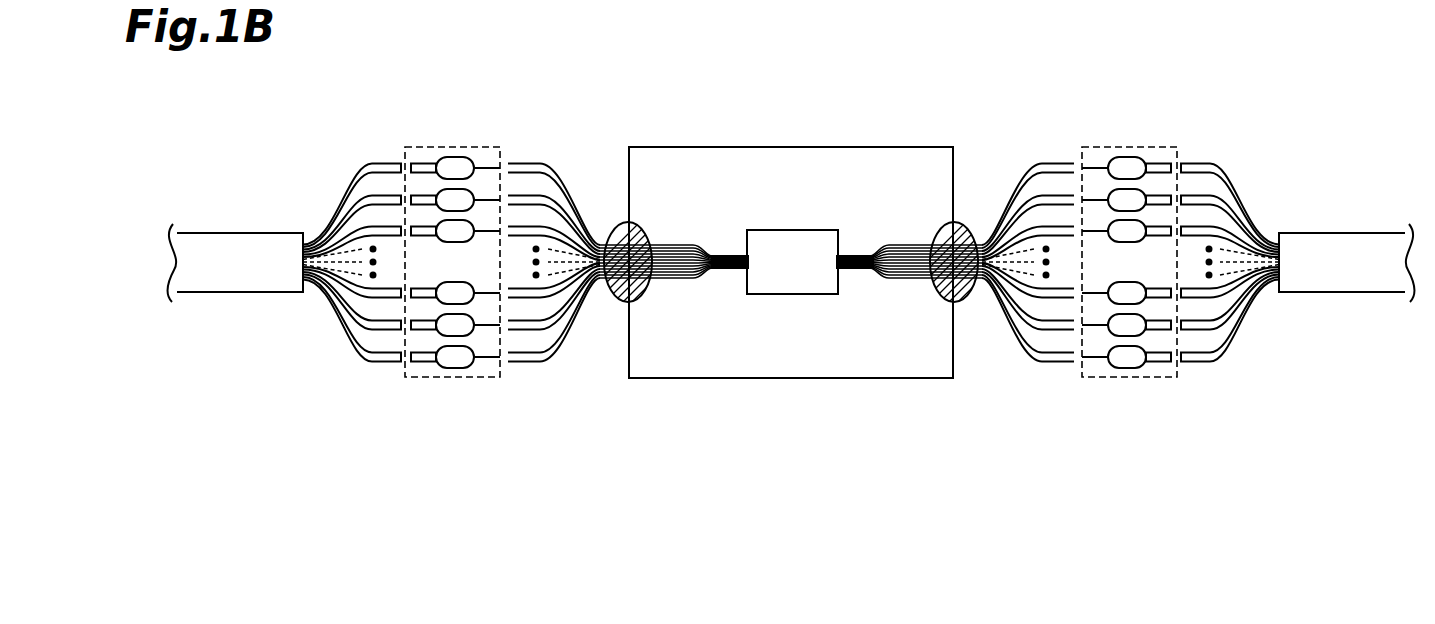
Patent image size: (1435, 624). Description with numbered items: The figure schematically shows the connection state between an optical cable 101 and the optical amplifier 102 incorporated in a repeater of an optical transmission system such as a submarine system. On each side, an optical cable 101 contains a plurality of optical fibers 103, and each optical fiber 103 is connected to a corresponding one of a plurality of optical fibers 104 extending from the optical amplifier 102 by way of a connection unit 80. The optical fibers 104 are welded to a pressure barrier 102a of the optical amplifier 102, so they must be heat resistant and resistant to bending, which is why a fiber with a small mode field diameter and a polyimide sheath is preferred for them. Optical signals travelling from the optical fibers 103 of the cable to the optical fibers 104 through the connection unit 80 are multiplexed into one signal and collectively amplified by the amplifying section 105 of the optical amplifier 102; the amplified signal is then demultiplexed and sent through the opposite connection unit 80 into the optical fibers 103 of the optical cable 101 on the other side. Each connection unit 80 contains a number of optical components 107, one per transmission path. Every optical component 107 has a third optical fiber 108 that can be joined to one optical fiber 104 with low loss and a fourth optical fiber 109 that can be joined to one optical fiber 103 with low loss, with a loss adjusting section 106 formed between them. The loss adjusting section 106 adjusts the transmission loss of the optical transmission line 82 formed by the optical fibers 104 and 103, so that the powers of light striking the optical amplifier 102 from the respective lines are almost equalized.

The connection unit 80 is at (463, 146).
The optical transmission line 82 is at (615, 470).
The optical cable 101 is at (266, 284).
The optical amplifier 102 is at (803, 157).
The pressure barrier 102a is at (870, 147).
The optical fiber 103 is at (372, 163).
The optical fiber 104 is at (525, 163).
The amplifying section 105 is at (788, 278).
The loss adjusting section 106 is at (460, 332).
The optical component 107 is at (540, 429).
The third optical fiber 108 is at (482, 330).
The fourth optical fiber 109 is at (428, 330).